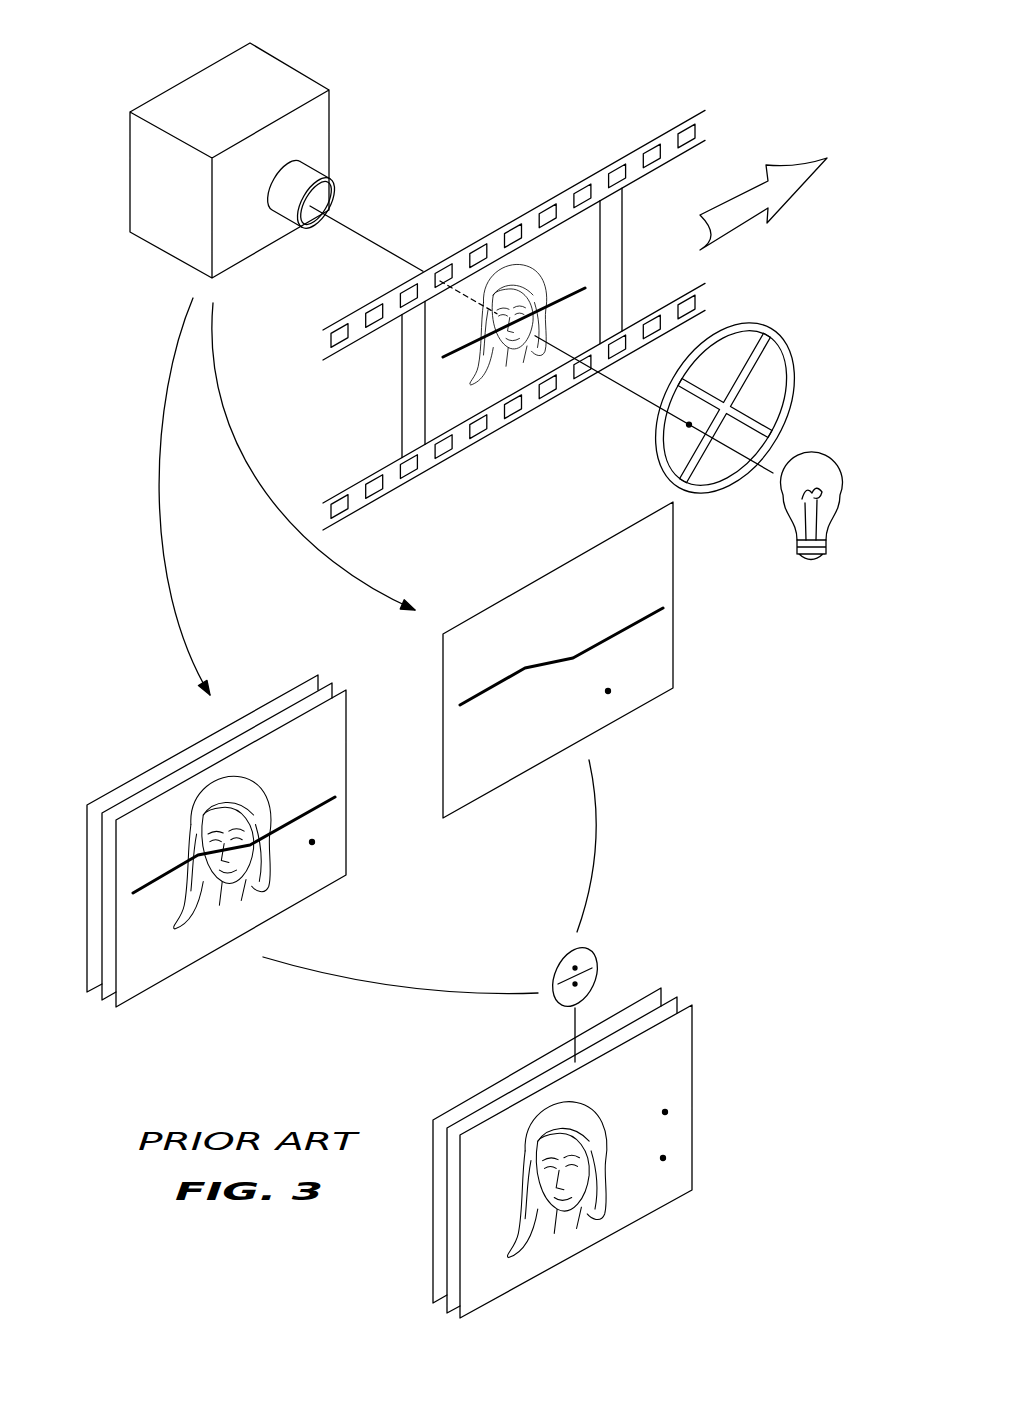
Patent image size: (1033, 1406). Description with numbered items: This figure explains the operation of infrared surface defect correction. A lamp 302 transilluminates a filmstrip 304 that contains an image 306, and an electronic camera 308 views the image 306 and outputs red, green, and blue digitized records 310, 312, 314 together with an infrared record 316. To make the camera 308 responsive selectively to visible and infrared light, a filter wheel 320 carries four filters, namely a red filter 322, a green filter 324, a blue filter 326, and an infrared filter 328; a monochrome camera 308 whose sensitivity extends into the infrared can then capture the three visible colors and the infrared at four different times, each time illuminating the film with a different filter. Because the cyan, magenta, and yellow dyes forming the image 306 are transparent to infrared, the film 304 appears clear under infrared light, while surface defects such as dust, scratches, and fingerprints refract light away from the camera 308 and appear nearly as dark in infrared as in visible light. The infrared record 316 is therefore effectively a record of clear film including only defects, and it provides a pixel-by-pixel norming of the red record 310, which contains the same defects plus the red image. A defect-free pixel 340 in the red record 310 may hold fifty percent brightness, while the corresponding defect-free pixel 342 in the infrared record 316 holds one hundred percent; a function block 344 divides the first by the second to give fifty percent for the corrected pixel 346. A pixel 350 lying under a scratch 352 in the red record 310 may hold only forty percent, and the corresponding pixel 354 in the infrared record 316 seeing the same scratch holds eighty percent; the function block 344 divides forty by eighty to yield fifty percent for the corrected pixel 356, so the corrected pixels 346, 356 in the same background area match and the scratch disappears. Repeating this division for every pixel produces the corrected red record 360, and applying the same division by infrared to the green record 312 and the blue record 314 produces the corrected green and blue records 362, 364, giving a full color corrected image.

The lamp 302 is at (822, 472).
The filmstrip 304 is at (397, 489).
The image 306 is at (507, 397).
The electronic camera 308 is at (267, 70).
The red digitized record 310 is at (212, 768).
The green digitized record 312 is at (168, 775).
The blue digitized record 314 is at (132, 782).
The infrared record 316 is at (673, 593).
The filter wheel 320 is at (730, 398).
The red filter 322 is at (670, 448).
The green filter 324 is at (720, 465).
The blue filter 326 is at (773, 392).
The infrared filter 328 is at (732, 360).
The defect-free pixel 340 is at (312, 842).
The corresponding defect-free pixel 342 is at (608, 691).
The function block 344 is at (593, 962).
The corrected pixel 346 is at (663, 1158).
The pixel under scratch 350 is at (224, 845).
The scratch 352 is at (147, 882).
The corresponding pixel in infrared record 354 is at (622, 632).
The corrected pixel 356 is at (665, 1112).
The corrected red record 360 is at (553, 1077).
The corrected green record 362 is at (512, 1093).
The corrected blue record 364 is at (473, 1100).